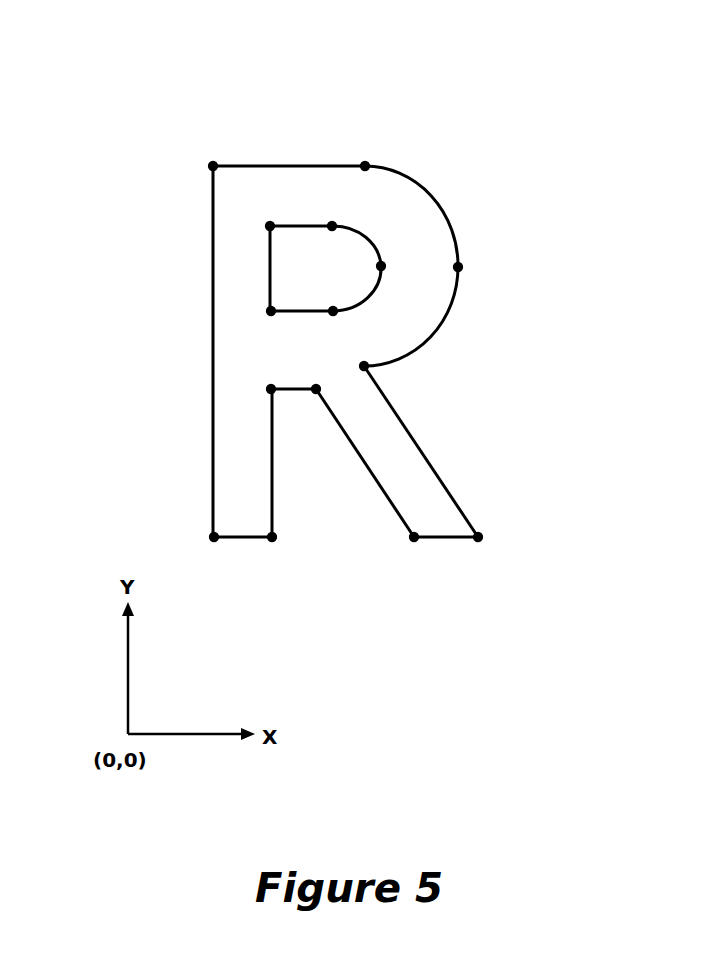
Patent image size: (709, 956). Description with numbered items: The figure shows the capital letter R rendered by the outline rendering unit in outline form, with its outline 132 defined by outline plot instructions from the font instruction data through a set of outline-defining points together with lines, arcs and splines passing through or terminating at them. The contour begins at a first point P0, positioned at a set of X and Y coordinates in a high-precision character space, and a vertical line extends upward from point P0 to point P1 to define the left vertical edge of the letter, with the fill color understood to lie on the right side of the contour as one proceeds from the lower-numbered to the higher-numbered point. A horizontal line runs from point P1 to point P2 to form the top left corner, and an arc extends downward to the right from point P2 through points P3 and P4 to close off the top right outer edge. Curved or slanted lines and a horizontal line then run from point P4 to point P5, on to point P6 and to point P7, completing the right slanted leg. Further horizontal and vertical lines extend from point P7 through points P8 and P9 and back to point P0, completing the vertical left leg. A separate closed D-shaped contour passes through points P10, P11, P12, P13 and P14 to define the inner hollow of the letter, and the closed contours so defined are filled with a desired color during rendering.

The capital R character outline 132 is at (582, 102).
The first outline-defining point P0 is at (198, 538).
The outline-defining point P1 is at (195, 166).
The outline-defining point P2 is at (366, 153).
The outline-defining point P3 is at (476, 269).
The outline-defining point P4 is at (387, 379).
The outline-defining point P5 is at (499, 538).
The outline-defining point P6 is at (396, 538).
The outline-defining point P7 is at (305, 404).
The outline-defining point P8 is at (271, 389).
The outline-defining point P9 is at (290, 538).
The outline-defining point P10 is at (271, 311).
The outline-defining point P11 is at (270, 226).
The outline-defining point P12 is at (329, 241).
The outline-defining point P13 is at (381, 266).
The outline-defining point P14 is at (329, 298).